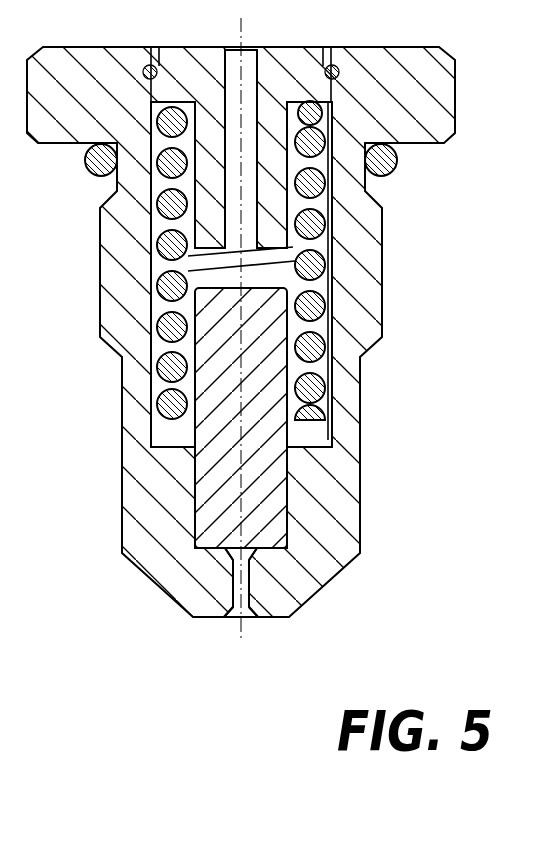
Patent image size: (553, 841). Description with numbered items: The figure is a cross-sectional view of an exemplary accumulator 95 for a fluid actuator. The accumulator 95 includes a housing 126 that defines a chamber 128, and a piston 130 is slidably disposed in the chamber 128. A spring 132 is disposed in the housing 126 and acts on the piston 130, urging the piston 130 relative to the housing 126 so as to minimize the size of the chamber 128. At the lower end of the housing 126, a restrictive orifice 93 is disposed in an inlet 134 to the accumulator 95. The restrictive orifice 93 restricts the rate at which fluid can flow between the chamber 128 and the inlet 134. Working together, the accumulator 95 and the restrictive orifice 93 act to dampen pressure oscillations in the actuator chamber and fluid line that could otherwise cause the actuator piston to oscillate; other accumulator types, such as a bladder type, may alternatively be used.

The accumulator 95 is at (274, 329).
The housing 126 is at (351, 437).
The piston 130 is at (267, 347).
The spring 132 is at (168, 243).
The chamber 128 is at (322, 554).
The restrictive orifice 93 is at (237, 590).
The inlet 134 is at (250, 617).